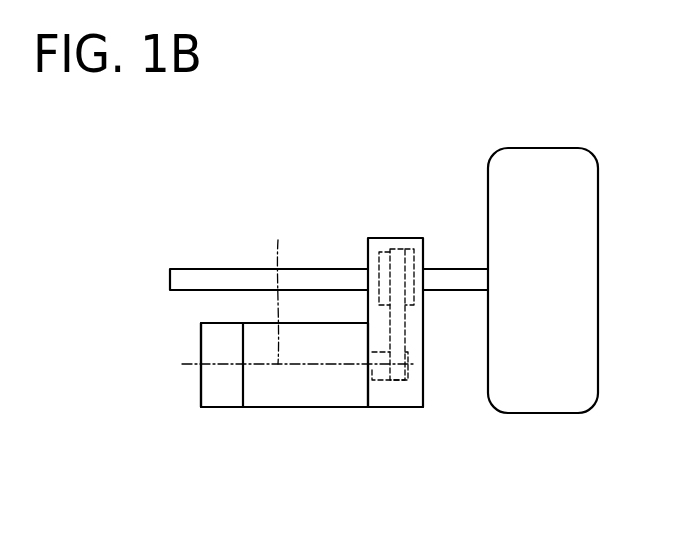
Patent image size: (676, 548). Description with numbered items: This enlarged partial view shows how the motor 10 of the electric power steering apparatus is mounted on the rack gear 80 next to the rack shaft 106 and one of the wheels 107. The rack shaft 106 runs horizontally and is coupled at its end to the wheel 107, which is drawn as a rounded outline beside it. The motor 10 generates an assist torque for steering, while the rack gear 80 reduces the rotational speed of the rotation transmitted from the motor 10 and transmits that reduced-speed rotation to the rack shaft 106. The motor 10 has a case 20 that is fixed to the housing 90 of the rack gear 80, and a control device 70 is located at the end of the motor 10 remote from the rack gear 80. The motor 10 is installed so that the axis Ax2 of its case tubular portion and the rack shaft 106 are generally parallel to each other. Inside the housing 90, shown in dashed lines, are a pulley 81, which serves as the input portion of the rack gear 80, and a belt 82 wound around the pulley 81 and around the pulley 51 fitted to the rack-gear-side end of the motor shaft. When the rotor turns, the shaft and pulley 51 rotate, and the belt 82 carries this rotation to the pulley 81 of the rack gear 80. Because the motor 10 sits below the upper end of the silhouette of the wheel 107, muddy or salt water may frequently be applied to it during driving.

The motor 10 is at (342, 343).
The case 20 is at (284, 399).
The pulley 51 is at (380, 372).
The control device 70 is at (221, 404).
The rack gear 80 is at (426, 334).
The pulley 81 is at (418, 262).
The belt 82 is at (401, 330).
The housing 90 is at (421, 441).
The rack shaft 106 is at (201, 279).
The wheel 107 is at (538, 160).
The axis Ax2 is at (285, 282).